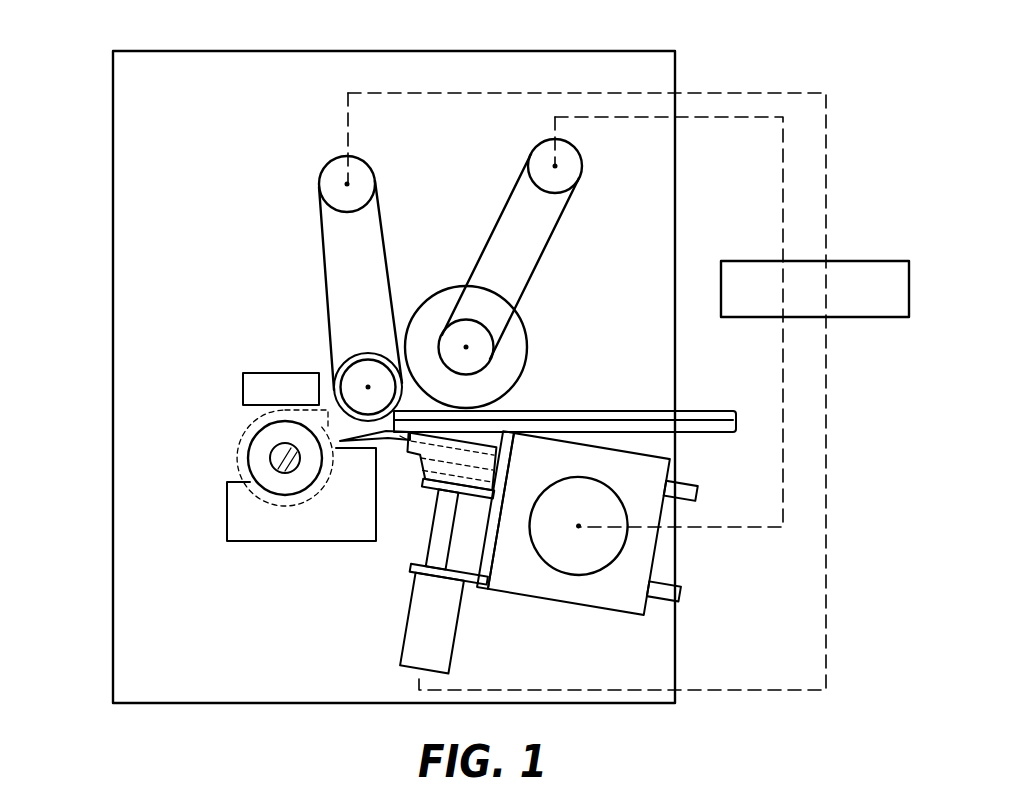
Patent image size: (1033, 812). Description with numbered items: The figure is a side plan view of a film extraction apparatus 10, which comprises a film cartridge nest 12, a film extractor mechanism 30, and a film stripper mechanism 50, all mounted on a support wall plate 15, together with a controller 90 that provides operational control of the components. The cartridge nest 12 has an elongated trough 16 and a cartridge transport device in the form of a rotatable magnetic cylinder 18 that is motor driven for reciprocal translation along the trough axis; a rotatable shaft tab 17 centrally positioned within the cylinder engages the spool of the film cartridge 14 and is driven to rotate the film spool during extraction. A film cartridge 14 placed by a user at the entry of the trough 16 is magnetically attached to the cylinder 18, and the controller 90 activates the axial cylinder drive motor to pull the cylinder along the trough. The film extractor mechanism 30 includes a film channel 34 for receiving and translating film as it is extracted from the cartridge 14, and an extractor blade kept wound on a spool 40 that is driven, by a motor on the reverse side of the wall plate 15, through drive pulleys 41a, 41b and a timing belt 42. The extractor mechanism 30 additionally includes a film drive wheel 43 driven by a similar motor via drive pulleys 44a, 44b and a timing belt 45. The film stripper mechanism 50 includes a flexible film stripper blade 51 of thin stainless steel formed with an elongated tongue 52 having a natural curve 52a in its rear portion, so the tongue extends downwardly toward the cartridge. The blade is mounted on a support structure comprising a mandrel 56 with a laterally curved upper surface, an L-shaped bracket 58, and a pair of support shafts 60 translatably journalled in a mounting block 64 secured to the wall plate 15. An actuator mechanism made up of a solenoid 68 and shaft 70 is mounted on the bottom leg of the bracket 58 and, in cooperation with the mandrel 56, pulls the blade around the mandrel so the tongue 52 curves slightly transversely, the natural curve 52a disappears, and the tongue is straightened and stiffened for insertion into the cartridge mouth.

The film extraction apparatus 10 is at (88, 198).
The film cartridge nest 12 is at (216, 390).
The film cartridge 14 is at (243, 429).
The support wall plate 15 is at (222, 50).
The elongated trough 16 is at (257, 498).
The rotatable shaft tab 17 is at (297, 467).
The rotatable magnetic cylinder 18 is at (275, 480).
The film extractor mechanism 30 is at (568, 307).
The film channel 34 is at (736, 410).
The spool 40 is at (529, 337).
The drive pulley 41a is at (583, 159).
The drive pulley 41b is at (474, 362).
The timing belt 42 is at (548, 250).
The film drive wheel 43 is at (378, 357).
The drive pulley 44a is at (322, 168).
The drive pulley 44b is at (338, 372).
The timing belt 45 is at (321, 244).
The film stripper mechanism 50 is at (385, 598).
The flexible film stripper blade 51 is at (480, 464).
The elongated tongue 52 is at (353, 440).
The natural curve 52a is at (396, 440).
The mandrel 56 is at (413, 453).
The L-shaped bracket 58 is at (478, 583).
The support shafts 60 is at (690, 484).
The mounting block 64 is at (665, 553).
The solenoid 68 is at (403, 667).
The shaft 70 is at (455, 548).
The controller 90 is at (854, 262).